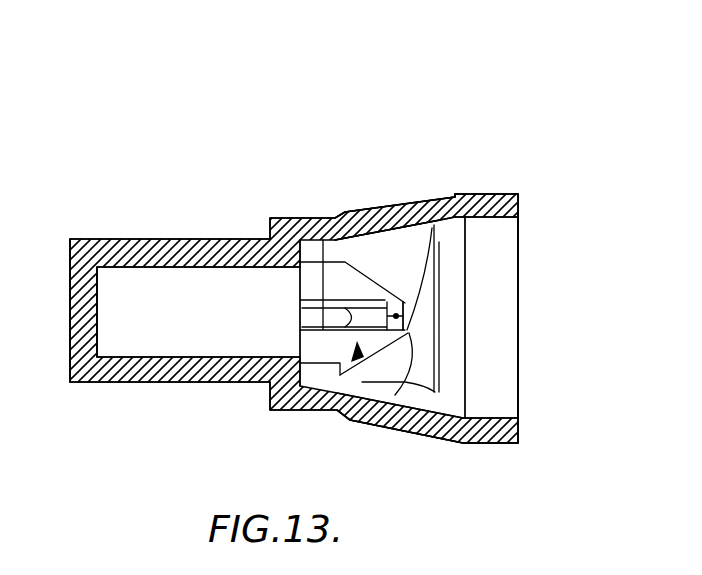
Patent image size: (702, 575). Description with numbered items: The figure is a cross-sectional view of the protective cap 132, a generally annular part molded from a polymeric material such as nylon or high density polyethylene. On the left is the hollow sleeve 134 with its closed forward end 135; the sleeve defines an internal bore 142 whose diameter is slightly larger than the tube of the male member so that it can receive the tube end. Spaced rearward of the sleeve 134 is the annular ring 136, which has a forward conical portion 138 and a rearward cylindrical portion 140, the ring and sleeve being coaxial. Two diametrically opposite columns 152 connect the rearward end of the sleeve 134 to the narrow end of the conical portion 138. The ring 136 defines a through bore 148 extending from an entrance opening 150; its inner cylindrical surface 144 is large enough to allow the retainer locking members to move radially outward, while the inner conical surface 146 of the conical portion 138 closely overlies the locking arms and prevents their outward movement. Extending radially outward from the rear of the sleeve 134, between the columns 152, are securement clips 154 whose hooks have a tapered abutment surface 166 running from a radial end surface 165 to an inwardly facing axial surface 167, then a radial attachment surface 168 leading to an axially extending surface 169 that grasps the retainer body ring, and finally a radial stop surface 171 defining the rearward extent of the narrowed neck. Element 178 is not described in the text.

The protective cap 132 is at (290, 92).
The hollow sleeve 134 is at (204, 240).
The closed forward end 135 is at (70, 347).
The annular ring 136 is at (503, 183).
The forward conical portion 138 is at (433, 433).
The rearward cylindrical portion 140 is at (482, 443).
The internal bore 142 is at (212, 325).
The inner cylindrical surface 144 is at (498, 219).
The inner conical surface 146 is at (458, 208).
The through bore 148 is at (490, 330).
The entrance opening 150 is at (521, 285).
The column 152 is at (383, 300).
The securement clip 154 is at (355, 383).
The radial end surface 165 is at (420, 237).
The tapered abutment surface 166 is at (398, 400).
The inwardly facing axial surface 167 is at (397, 238).
The attachment surface 168 is at (402, 300).
The axially extending surface 169 is at (353, 300).
The radial stop surface 171 is at (320, 245).
The insert 178 is at (325, 240).